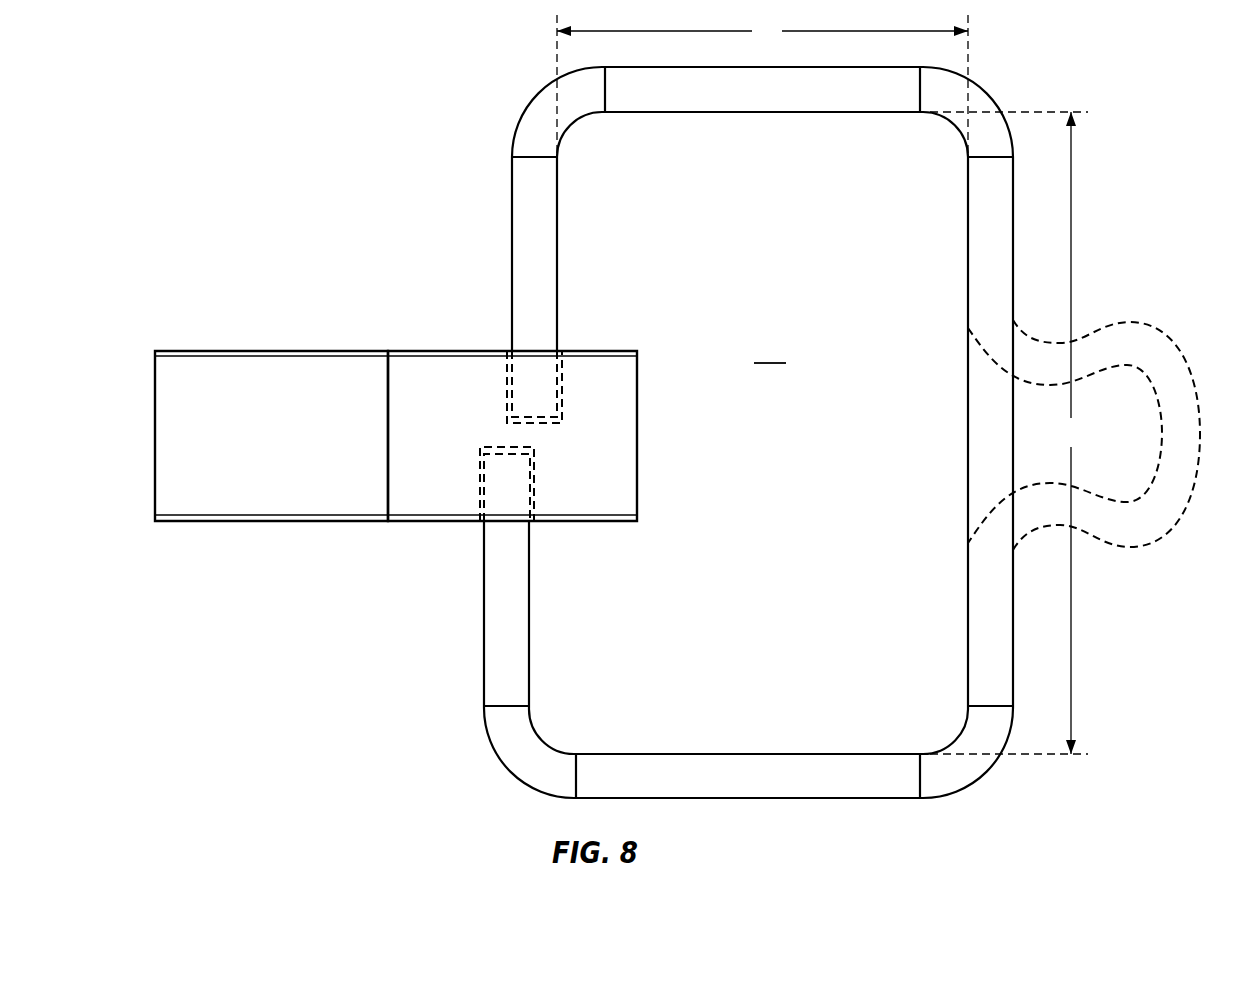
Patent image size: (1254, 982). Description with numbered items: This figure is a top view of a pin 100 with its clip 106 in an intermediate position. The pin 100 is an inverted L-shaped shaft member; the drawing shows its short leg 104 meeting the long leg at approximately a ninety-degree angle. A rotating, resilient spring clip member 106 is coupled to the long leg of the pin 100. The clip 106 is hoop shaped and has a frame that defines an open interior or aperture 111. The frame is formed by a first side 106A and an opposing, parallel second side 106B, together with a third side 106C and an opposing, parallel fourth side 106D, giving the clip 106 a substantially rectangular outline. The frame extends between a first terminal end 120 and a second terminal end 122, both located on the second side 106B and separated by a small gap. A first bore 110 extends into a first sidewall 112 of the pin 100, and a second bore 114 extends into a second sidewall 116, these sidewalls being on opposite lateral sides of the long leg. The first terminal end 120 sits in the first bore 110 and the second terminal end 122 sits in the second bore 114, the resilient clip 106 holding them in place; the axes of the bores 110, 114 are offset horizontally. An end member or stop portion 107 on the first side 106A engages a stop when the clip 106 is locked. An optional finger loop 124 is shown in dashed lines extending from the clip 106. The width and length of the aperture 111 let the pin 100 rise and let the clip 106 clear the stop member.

The pin 100 is at (226, 233).
The short leg 104 is at (264, 387).
The clip member 106 is at (662, 432).
The first side 106A is at (988, 433).
The second side 106B is at (557, 258).
The third side 106C is at (770, 767).
The fourth side 106D is at (785, 112).
The stop portion 107 is at (968, 238).
The first bore 110 is at (565, 377).
The aperture 111 is at (770, 351).
The first sidewall 112 is at (466, 350).
The second bore 114 is at (533, 473).
The second sidewall 116 is at (623, 521).
The first terminal end 120 is at (540, 400).
The second terminal end 122 is at (500, 484).
The finger loop 124 is at (1135, 540).